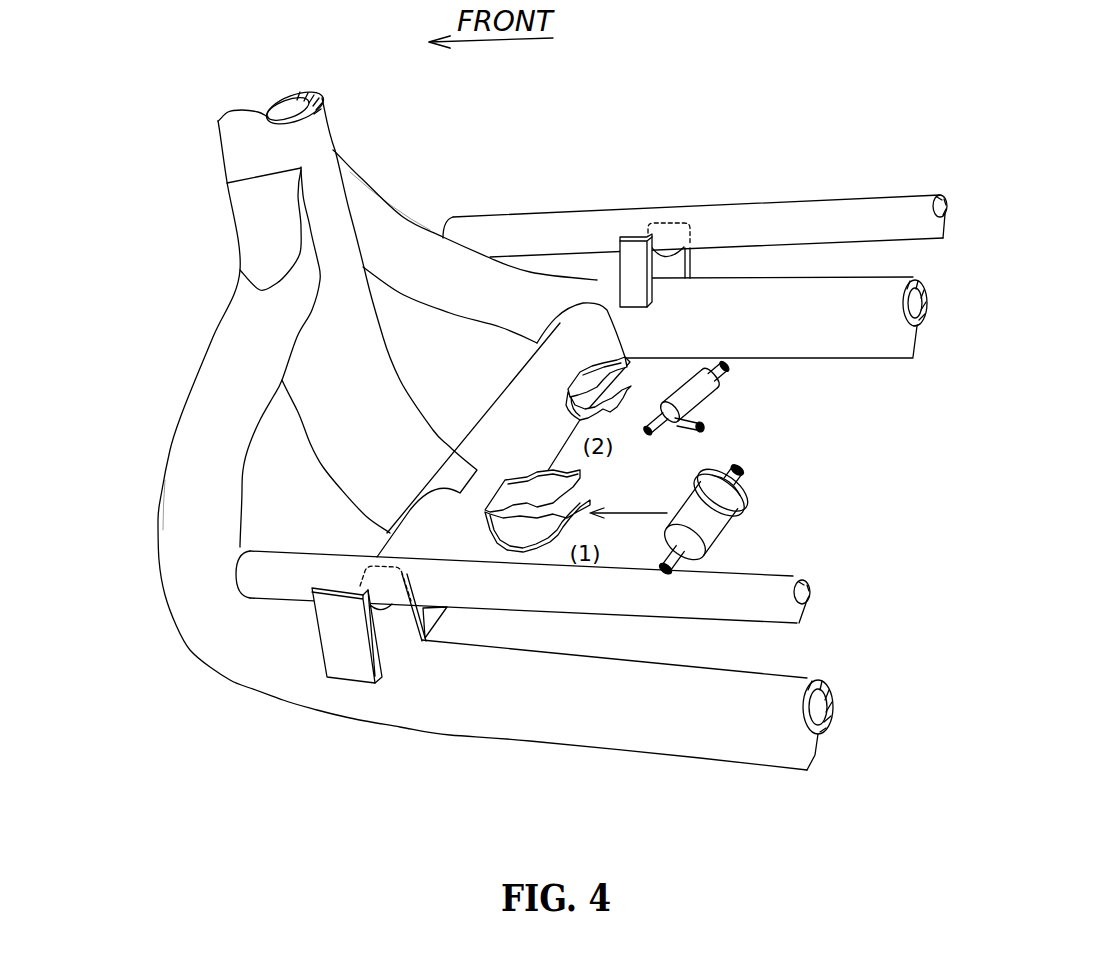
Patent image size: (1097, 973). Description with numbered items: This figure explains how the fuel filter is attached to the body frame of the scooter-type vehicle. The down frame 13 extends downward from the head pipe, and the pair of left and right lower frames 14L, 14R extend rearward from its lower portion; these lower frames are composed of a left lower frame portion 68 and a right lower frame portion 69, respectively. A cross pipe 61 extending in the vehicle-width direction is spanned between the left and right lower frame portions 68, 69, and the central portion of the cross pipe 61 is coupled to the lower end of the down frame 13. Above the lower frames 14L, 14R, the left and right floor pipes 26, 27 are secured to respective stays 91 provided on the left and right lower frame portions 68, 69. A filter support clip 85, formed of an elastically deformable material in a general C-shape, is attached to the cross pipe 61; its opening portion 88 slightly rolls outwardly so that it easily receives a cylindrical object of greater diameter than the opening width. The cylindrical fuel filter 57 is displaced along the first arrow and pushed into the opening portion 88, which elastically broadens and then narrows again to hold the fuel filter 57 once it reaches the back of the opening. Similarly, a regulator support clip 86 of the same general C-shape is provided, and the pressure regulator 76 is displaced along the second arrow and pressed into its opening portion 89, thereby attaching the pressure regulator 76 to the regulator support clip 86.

The down frame 13 is at (210, 144).
The left lower frame 14L is at (178, 412).
The right lower frame 14R is at (362, 173).
The left floor pipe 26 is at (297, 600).
The right floor pipe 27 is at (560, 212).
The fuel filter 57 is at (735, 529).
The cross pipe 61 is at (500, 403).
The left lower frame portion 68 is at (170, 478).
The right lower frame portion 69 is at (400, 216).
The pressure regulator 76 is at (712, 403).
The filter support clip 85 is at (532, 550).
The regulator support clip 86 is at (633, 382).
The opening portion 88 is at (594, 492).
The opening portion 89 is at (642, 397).
The stay 91 is at (622, 240).